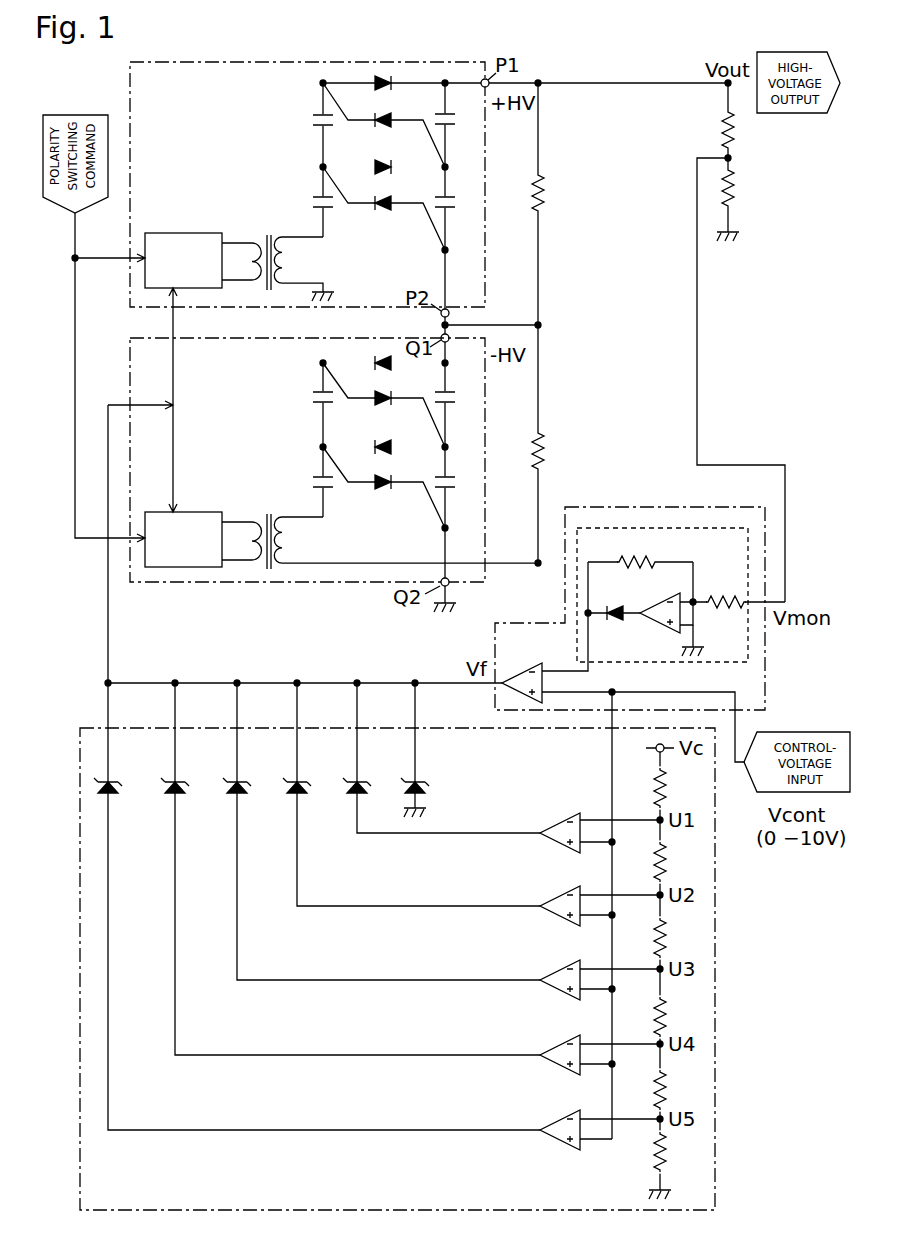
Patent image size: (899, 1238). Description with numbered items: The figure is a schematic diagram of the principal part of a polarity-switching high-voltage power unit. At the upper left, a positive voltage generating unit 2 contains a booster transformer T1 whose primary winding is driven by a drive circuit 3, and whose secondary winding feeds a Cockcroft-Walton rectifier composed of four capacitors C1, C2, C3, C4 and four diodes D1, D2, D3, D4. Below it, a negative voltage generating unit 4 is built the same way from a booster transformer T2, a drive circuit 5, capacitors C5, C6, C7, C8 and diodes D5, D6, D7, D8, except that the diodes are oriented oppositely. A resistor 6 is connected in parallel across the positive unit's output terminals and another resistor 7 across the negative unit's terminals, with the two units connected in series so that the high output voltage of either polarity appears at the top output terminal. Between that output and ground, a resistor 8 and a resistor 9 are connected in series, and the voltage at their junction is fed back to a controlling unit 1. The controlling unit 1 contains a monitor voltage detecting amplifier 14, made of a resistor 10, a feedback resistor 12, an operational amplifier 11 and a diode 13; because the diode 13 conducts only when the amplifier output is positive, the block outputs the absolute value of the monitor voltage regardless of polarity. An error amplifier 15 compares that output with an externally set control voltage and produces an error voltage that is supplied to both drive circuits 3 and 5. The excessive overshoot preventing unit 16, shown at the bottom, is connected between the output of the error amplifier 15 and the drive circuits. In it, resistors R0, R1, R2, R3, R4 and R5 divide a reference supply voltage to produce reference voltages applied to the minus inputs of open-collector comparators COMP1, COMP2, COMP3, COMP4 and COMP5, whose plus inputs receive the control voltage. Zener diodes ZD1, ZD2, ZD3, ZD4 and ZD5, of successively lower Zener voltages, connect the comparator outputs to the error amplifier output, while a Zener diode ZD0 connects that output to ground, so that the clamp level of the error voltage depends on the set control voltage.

The controlling unit 1 is at (637, 507).
The positive voltage generating unit 2 is at (128, 96).
The drive circuit 3 is at (165, 233).
The negative voltage generating unit 4 is at (128, 366).
The drive circuit 5 is at (160, 512).
The resistor 6 is at (547, 190).
The resistor 7 is at (547, 450).
The resistor 8 is at (733, 133).
The resistor 9 is at (733, 190).
The resistor 10 is at (718, 602).
The operational amplifier 11 is at (663, 627).
The resistor 12 is at (645, 562).
The diode 13 is at (618, 606).
The monitor voltage detecting amplifier 14 is at (687, 664).
The error amplifier 15 is at (539, 665).
The excessive overshoot preventing unit 16 is at (716, 874).
The booster transformer T1 is at (278, 255).
The booster transformer T2 is at (380, 529).
The capacitor C1 is at (312, 109).
The capacitor C2 is at (312, 191).
The capacitor C3 is at (457, 107).
The capacitor C4 is at (457, 190).
The capacitor C5 is at (312, 387).
The capacitor C6 is at (312, 471).
The capacitor C7 is at (457, 386).
The capacitor C8 is at (457, 470).
The diode D1 is at (370, 75).
The diode D2 is at (399, 110).
The diode D3 is at (370, 159).
The diode D4 is at (399, 194).
The diode D5 is at (370, 355).
The diode D6 is at (399, 390).
The diode D7 is at (370, 439).
The diode D8 is at (399, 475).
The Zener diode ZD0 is at (431, 750).
The Zener diode ZD1 is at (441, 758).
The Zener diode ZD2 is at (411, 794).
The Zener diode ZD3 is at (381, 831).
The Zener diode ZD4 is at (350, 869).
The Zener diode ZD5 is at (317, 906).
The comparator COMP1 is at (582, 822).
The comparator COMP2 is at (582, 895).
The comparator COMP3 is at (582, 969).
The comparator COMP4 is at (582, 1044).
The comparator COMP5 is at (582, 1119).
The resistor R0 is at (674, 788).
The resistor R1 is at (674, 862).
The resistor R2 is at (674, 938).
The resistor R3 is at (674, 1017).
The resistor R4 is at (674, 1090).
The resistor R5 is at (674, 1152).